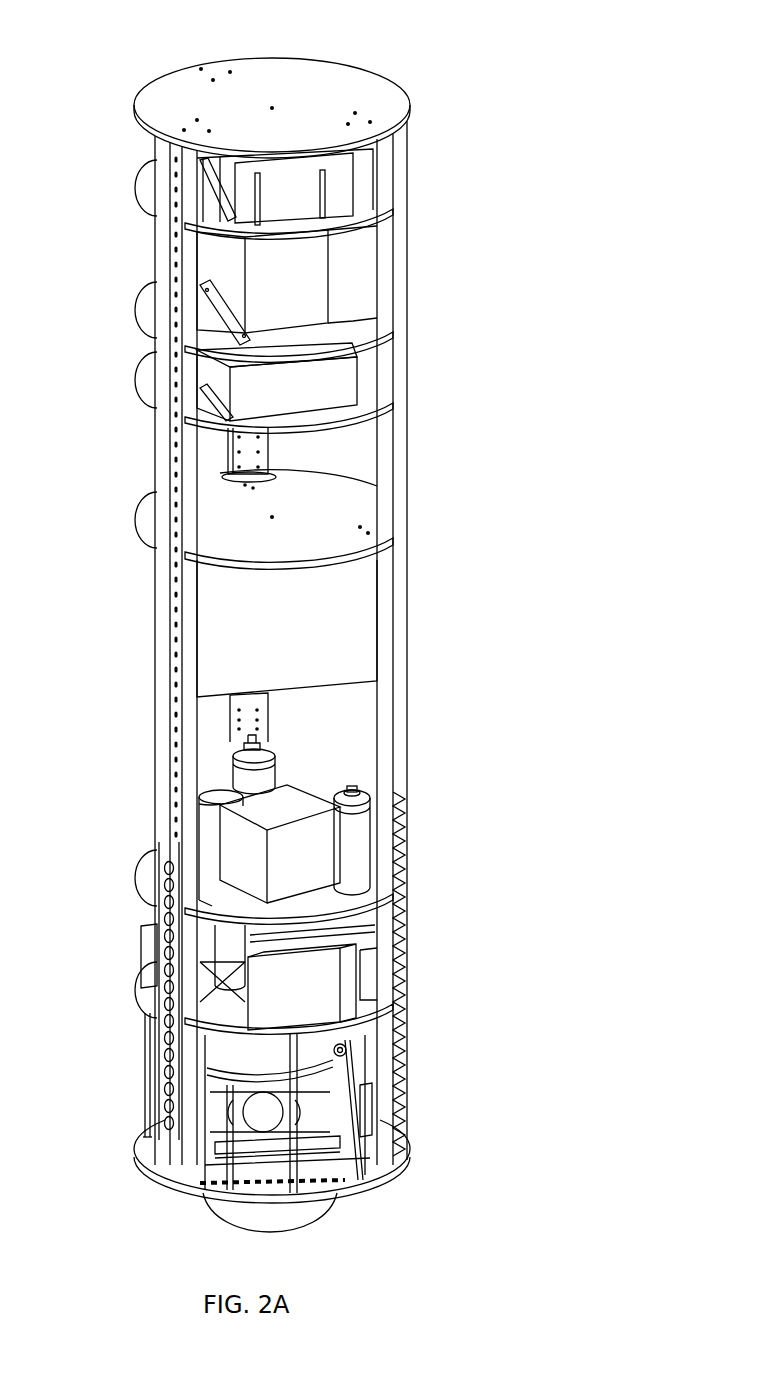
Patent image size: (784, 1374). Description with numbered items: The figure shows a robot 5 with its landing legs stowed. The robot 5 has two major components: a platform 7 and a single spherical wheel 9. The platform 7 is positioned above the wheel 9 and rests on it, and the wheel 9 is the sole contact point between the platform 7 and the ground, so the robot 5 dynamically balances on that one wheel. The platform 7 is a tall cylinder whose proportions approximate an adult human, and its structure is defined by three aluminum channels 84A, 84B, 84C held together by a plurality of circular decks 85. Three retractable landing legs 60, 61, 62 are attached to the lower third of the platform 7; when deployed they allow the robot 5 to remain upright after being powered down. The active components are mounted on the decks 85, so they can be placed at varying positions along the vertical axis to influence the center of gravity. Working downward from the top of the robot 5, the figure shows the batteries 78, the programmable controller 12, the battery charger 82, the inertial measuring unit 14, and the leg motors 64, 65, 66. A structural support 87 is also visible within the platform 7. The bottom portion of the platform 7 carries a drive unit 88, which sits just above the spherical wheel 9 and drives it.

The robot 5 is at (39, 28).
The platform 7 is at (408, 292).
The spherical wheel 9 is at (323, 1212).
The programmable controller 12 is at (232, 277).
The inertial measuring unit 14 is at (283, 805).
The retractable landing leg 60 is at (400, 866).
The retractable landing leg 61 is at (266, 746).
The retractable landing leg 62 is at (162, 879).
The leg motor 64 is at (358, 838).
The leg motor 65 is at (278, 770).
The leg motor 66 is at (214, 793).
The batteries 78 is at (243, 188).
The battery charger 82 is at (217, 374).
The aluminum channel 84A is at (408, 497).
The aluminum channel 84B is at (157, 468).
The aluminum channel 84C is at (268, 454).
The circular decks 85 is at (357, 83).
The structural support 87 is at (223, 626).
The drive unit 88 is at (438, 899).